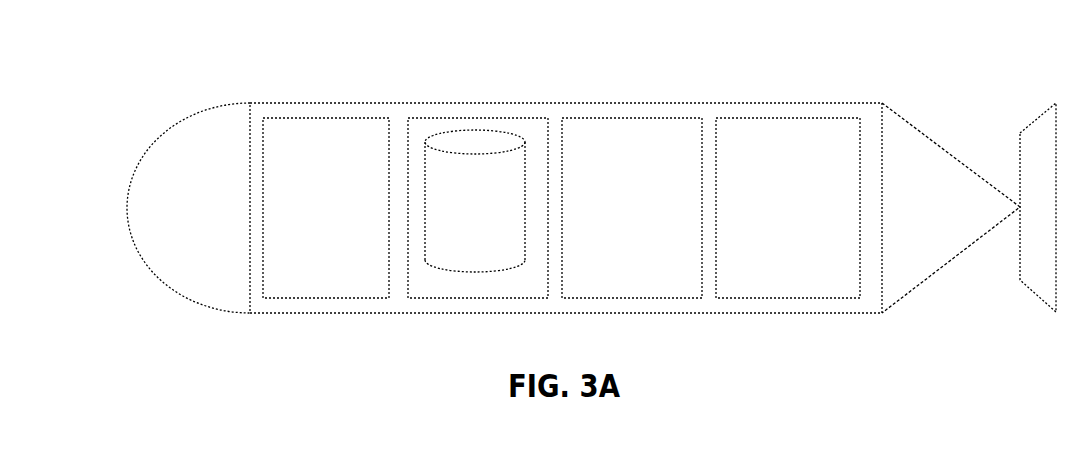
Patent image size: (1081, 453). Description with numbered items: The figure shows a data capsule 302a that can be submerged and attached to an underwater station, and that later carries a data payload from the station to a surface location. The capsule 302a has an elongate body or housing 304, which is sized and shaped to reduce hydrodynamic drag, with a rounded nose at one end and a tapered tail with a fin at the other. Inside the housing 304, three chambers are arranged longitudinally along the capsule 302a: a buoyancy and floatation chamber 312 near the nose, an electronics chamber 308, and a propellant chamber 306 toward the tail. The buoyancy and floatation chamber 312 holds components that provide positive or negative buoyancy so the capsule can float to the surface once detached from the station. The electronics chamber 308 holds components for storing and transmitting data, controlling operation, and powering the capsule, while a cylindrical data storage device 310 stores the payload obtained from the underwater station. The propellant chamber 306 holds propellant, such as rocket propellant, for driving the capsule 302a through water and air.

The data capsule 302a is at (150, 62).
The elongate body or housing 304 is at (828, 313).
The propellant chamber 306 is at (783, 177).
The electronics chamber 308 is at (621, 172).
The data storage device 310 is at (483, 199).
The buoyancy and floatation chamber 312 is at (297, 167).